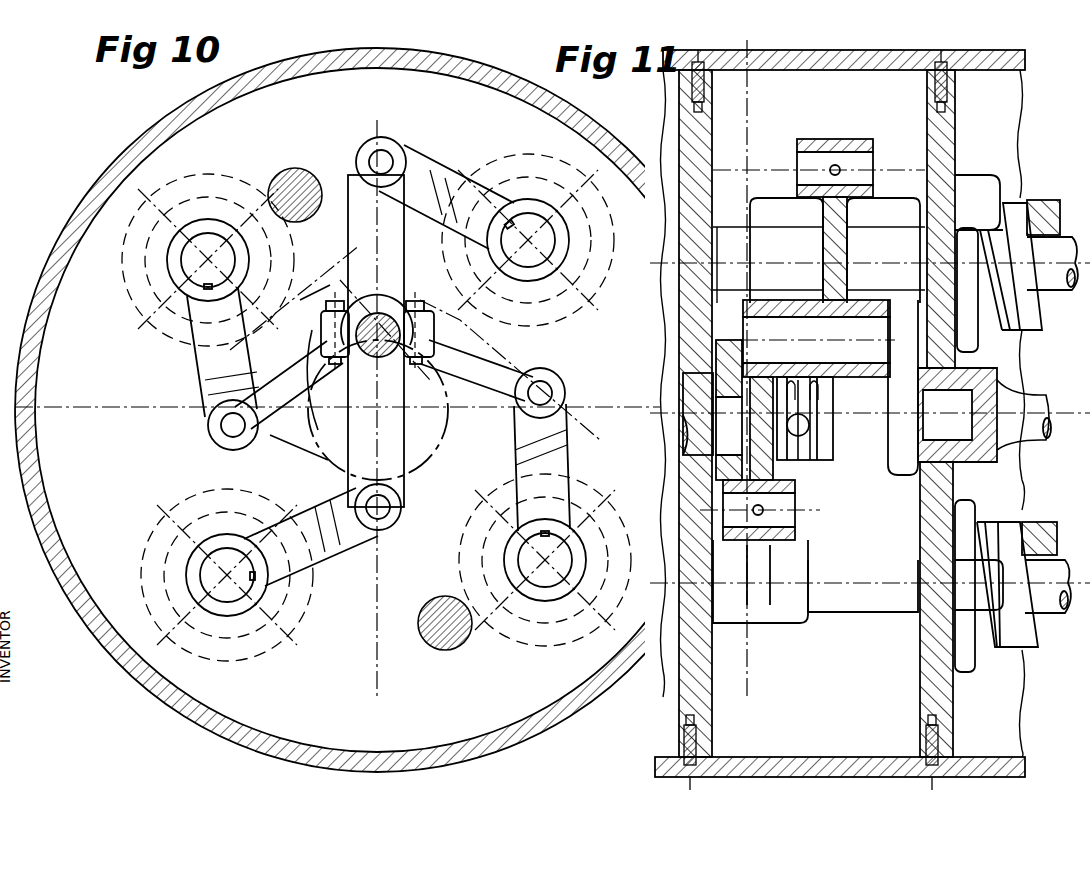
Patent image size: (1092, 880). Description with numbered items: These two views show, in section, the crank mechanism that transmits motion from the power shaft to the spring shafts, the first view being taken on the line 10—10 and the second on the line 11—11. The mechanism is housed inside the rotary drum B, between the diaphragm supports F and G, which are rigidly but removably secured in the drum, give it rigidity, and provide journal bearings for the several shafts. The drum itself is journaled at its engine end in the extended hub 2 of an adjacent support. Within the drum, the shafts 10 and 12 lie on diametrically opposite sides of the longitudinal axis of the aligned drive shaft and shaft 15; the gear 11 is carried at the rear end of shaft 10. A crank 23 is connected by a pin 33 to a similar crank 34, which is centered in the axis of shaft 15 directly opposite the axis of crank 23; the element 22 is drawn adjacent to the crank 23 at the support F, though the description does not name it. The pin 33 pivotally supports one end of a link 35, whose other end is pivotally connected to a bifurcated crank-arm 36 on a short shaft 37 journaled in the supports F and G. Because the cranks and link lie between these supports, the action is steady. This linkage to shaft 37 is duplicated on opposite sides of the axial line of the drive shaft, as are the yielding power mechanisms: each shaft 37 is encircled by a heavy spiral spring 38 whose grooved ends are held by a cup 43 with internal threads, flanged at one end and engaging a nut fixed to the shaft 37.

In FIG. 10, the hub 2 is at (340, 282).
In FIG. 10, the shaft 10 is at (290, 190).
In FIG. 11, the shaft 10 is at (747, 30).
In FIG. 10, the gear 11 is at (374, 788).
In FIG. 10, the shaft 12 is at (438, 640).
In FIG. 11, the shaft 15 is at (1035, 400).
In FIG. 11, the bearing 22 is at (690, 400).
In FIG. 11, the crank 23 is at (738, 378).
In FIG. 10, the pin 33 is at (305, 425).
In FIG. 11, the pin 33 is at (835, 388).
In FIG. 10, the crank 34 is at (410, 470).
In FIG. 11, the crank 34 is at (900, 418).
In FIG. 10, the link 35 is at (328, 300).
In FIG. 11, the link 35 is at (843, 278).
In FIG. 10, the bifurcated crank-arm 36 is at (200, 348).
In FIG. 11, the bifurcated crank-arm 36 is at (866, 140).
In FIG. 10, the short shaft 37 is at (165, 258).
In FIG. 11, the short shaft 37 is at (902, 258).
In FIG. 11, the spiral spring 38 is at (1038, 212).
In FIG. 10, the cup 43 is at (212, 182).
In FIG. 11, the cup 43 is at (965, 200).
In FIG. 10, the rotary drum B is at (118, 178).
In FIG. 11, the rotary drum B is at (735, 760).
In FIG. 11, the support F is at (696, 670).
In FIG. 10, the support G is at (90, 248).
In FIG. 11, the support G is at (928, 680).